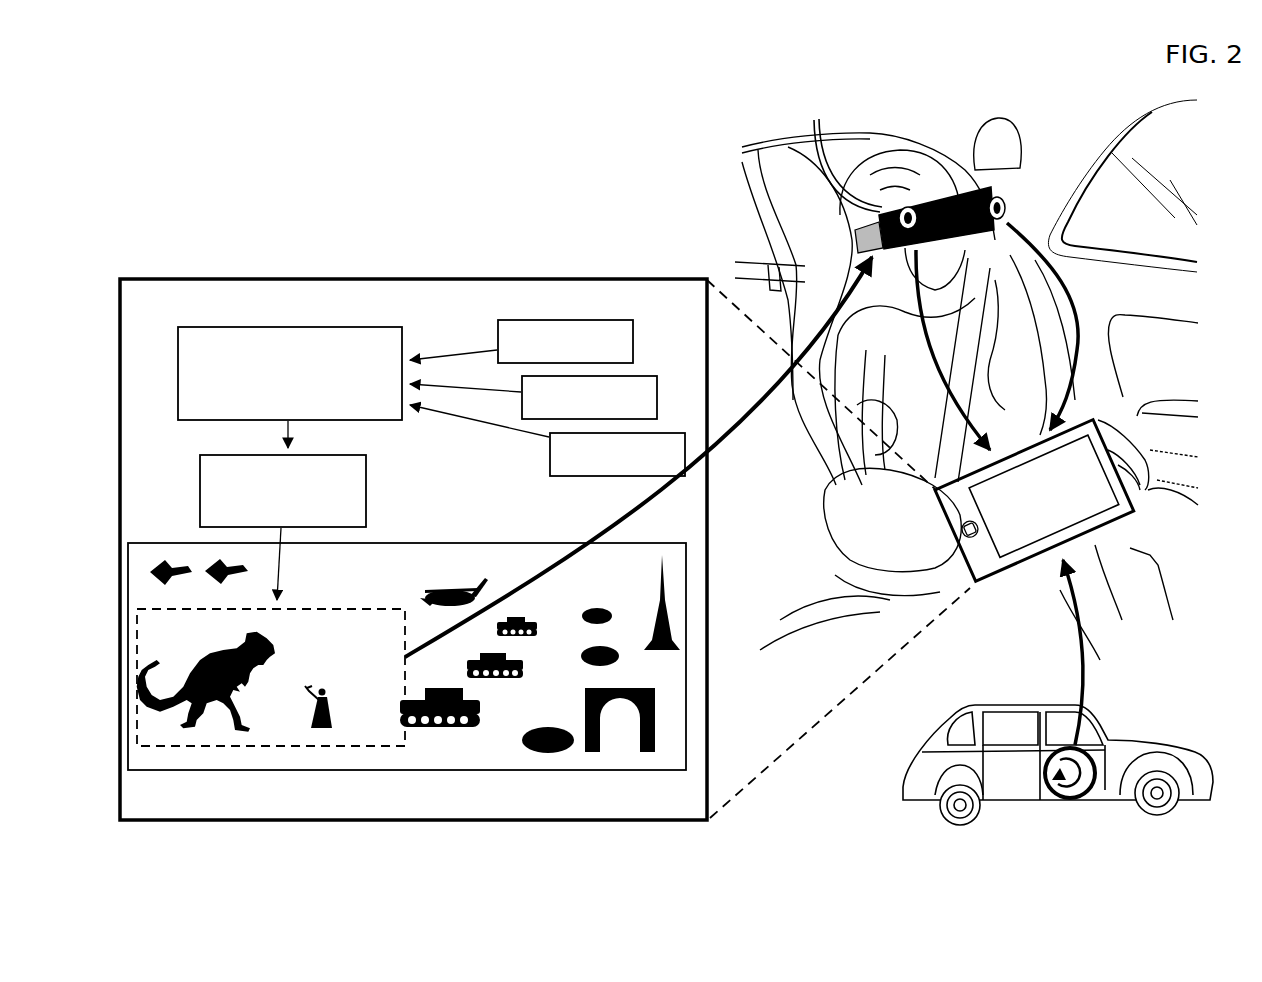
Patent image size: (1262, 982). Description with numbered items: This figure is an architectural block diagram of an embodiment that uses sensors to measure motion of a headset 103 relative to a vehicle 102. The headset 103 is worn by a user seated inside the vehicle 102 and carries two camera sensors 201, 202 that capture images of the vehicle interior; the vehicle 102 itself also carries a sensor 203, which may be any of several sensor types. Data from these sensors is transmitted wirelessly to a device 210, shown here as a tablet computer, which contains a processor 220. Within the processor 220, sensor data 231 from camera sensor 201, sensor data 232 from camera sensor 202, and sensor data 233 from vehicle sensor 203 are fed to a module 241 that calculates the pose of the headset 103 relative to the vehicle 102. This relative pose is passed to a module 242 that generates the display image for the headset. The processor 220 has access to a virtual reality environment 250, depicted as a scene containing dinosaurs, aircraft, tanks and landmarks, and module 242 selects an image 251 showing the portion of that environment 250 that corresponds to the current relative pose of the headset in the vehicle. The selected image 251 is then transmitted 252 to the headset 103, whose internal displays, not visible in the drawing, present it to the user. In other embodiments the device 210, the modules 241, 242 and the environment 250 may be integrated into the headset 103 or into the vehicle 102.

The vehicle 102 is at (905, 762).
The headset 103 is at (958, 194).
The camera sensor 201 is at (1004, 201).
The camera sensor 202 is at (838, 152).
The sensor 203 is at (1078, 800).
The device 210 is at (1135, 518).
The processor 220 is at (524, 279).
The sensor data 231 is at (563, 320).
The sensor data 232 is at (645, 376).
The sensor data 233 is at (670, 433).
The module 241 is at (302, 327).
The module 242 is at (200, 490).
The virtual reality environment 250 is at (438, 771).
The image 251 is at (276, 747).
The transmission of image to headset 252 is at (757, 422).